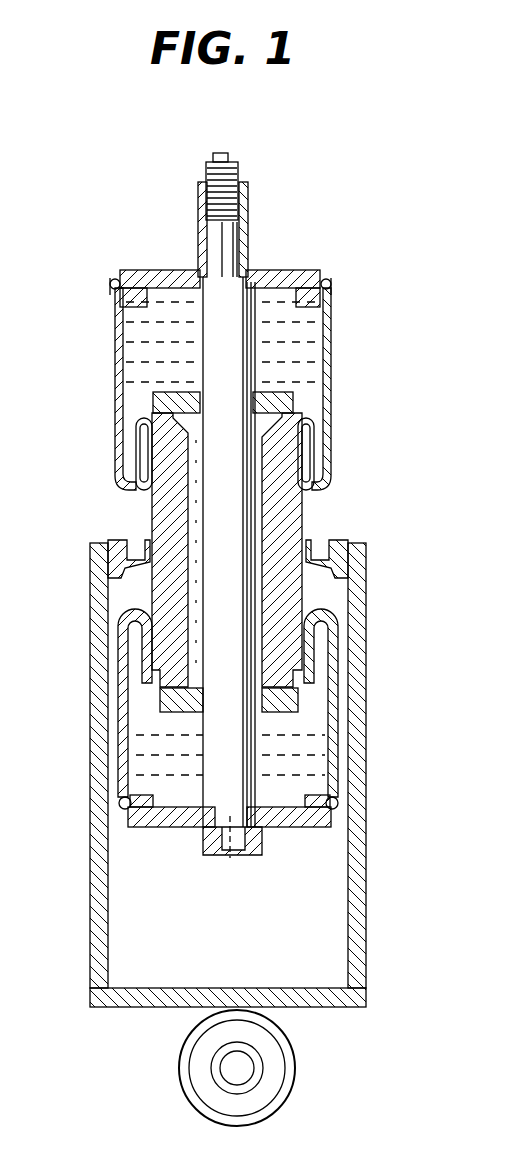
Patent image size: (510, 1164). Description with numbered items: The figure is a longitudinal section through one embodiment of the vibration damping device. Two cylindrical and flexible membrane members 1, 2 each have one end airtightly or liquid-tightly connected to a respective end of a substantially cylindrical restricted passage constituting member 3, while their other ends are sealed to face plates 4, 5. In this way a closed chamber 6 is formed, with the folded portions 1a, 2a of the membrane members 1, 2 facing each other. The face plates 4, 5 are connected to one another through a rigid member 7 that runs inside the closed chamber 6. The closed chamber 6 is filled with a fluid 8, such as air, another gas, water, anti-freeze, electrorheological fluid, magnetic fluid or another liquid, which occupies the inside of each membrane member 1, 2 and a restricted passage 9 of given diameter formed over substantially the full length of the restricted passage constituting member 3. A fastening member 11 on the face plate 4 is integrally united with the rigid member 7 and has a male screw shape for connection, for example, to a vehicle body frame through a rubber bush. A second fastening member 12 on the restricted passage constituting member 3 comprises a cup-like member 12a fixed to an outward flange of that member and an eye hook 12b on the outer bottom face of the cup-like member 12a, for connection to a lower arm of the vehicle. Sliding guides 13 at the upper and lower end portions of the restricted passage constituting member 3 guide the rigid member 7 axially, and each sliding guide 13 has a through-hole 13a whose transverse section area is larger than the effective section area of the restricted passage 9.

The cylindrical and flexible membrane member 1 is at (345, 380).
The folded portion of the membrane member 1a is at (333, 483).
The cylindrical and flexible membrane member 2 is at (343, 713).
The folded portion of the membrane member 2a is at (315, 603).
The restricted passage constituting member 3 is at (315, 508).
The face plate 4 is at (292, 270).
The face plate 5 is at (293, 827).
The closed chamber 6 is at (168, 351).
The rigid member 7 is at (205, 498).
The fluid 8 is at (130, 350).
The restricted passage 9 is at (262, 533).
The fastening member 11 is at (238, 178).
The fastening member 12 is at (85, 858).
The cup-like member 12a is at (140, 997).
The eye hook 12b is at (298, 1053).
The sliding guide 13 is at (276, 386).
The through-hole 13a is at (180, 392).